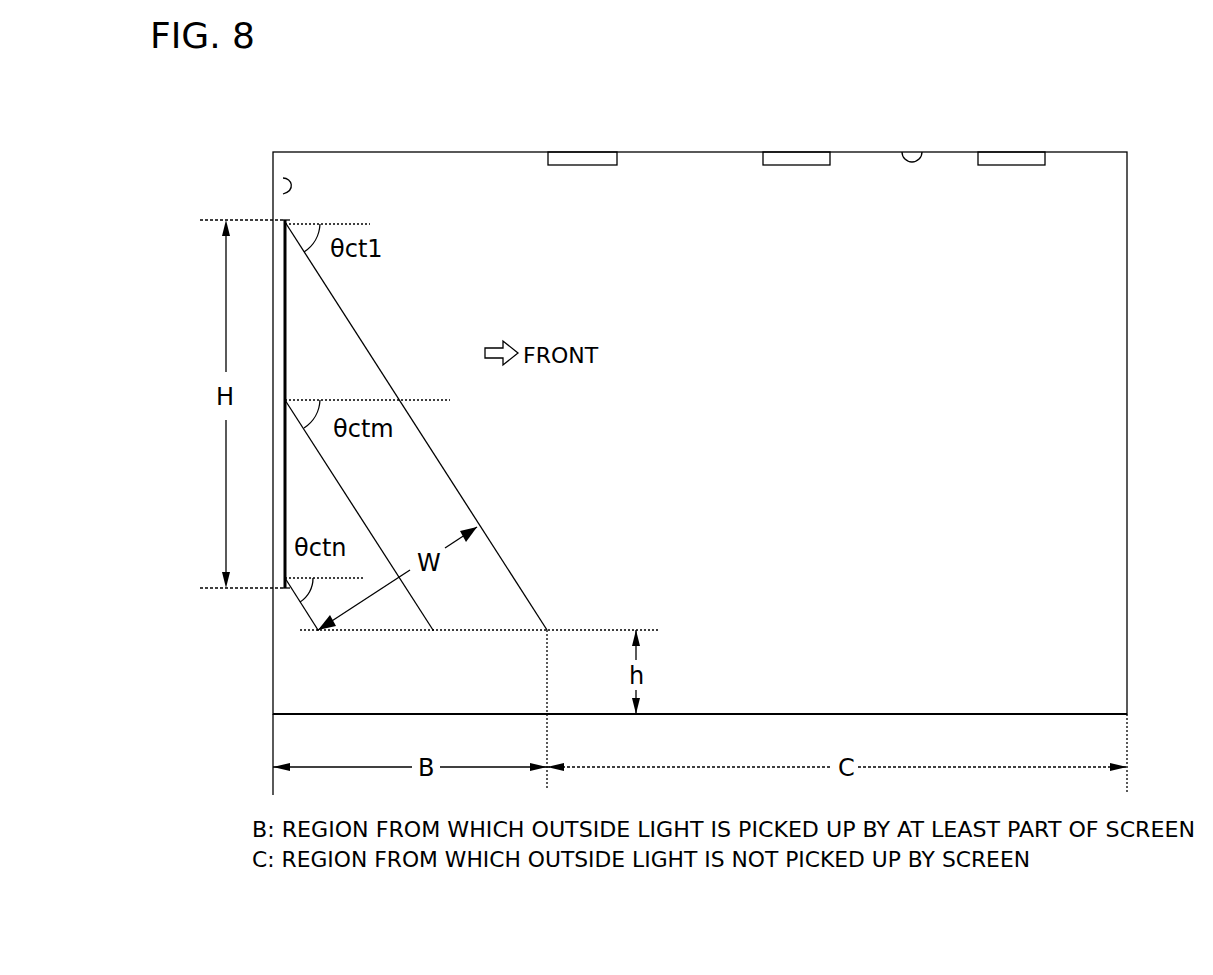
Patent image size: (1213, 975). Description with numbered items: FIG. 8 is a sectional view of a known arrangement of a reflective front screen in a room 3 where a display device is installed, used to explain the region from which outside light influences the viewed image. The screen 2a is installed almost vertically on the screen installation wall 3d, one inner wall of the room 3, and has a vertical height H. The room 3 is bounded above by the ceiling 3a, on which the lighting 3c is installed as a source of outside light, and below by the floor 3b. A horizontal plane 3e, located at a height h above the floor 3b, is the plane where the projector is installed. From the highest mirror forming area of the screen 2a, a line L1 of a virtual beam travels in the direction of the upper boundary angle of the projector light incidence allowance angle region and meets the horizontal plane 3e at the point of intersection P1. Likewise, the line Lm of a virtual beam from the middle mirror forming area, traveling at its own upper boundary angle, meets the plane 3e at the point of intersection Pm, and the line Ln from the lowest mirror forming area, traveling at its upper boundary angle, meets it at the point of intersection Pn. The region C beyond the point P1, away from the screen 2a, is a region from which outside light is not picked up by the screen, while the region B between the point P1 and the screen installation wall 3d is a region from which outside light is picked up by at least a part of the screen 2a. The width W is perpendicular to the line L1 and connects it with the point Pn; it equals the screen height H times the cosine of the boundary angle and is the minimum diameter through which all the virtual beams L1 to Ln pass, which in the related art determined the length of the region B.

The screen 2a is at (290, 213).
The room 3 is at (1080, 172).
The ceiling 3a is at (917, 160).
The floor 3b is at (887, 713).
The lighting 3c is at (600, 160).
The screen installation wall 3d is at (283, 186).
The horizontal plane 3e is at (655, 630).
The line of a virtual beam L1 is at (363, 345).
The line of a virtual beam Lm is at (345, 494).
The line of a virtual beam Ln is at (306, 612).
The point of intersection P1 is at (547, 630).
The point of intersection Pm is at (434, 630).
The point of intersection Pn is at (320, 632).